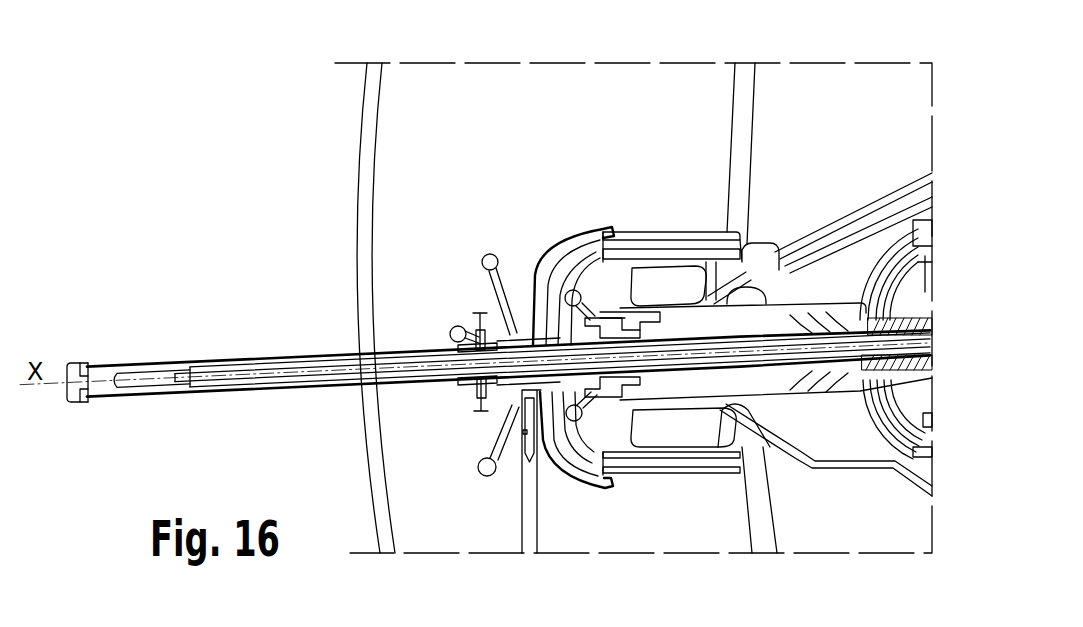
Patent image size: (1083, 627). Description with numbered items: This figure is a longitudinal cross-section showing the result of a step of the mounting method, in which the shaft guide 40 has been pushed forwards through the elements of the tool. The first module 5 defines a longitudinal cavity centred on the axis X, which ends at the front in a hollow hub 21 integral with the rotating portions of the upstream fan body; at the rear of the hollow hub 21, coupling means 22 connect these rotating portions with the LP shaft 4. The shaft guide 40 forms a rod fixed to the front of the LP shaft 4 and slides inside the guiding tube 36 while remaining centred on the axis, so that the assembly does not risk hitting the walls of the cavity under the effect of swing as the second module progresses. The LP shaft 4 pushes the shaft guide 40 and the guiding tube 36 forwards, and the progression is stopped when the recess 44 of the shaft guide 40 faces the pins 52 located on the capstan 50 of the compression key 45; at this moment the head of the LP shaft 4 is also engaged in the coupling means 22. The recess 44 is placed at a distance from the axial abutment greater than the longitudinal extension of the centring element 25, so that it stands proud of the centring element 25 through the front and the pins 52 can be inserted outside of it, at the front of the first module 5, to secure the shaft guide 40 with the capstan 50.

The first module 5 is at (340, 117).
The guiding tube 36 is at (101, 364).
The shaft guide 40 is at (210, 364).
The pins 52 is at (452, 343).
The capstan 50 is at (494, 301).
The compression key 45 is at (533, 300).
The recess 44 is at (462, 352).
The hollow hub 21 is at (710, 297).
The coupling means 22 is at (883, 323).
The LP shaft 4 is at (910, 327).
The centring element 25 is at (745, 376).